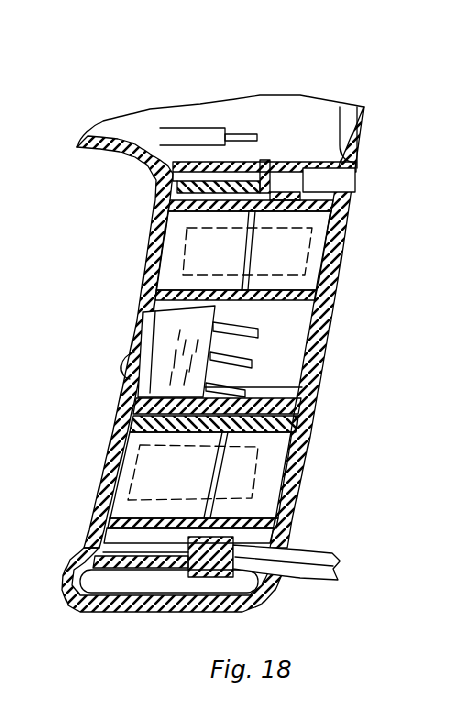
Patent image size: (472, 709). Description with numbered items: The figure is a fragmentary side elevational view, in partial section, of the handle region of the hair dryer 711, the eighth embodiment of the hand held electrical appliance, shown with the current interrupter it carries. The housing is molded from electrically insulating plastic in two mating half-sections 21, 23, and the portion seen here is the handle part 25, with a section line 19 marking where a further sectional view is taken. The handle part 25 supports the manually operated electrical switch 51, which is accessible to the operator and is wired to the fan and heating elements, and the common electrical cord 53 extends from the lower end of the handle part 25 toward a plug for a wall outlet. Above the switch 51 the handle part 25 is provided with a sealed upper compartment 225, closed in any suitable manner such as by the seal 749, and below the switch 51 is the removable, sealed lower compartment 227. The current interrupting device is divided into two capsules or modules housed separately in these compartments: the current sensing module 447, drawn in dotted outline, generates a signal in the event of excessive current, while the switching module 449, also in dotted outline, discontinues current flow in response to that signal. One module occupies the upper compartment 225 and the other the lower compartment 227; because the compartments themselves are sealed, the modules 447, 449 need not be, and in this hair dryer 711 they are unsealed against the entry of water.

The section line 19- 19 is at (272, 35).
The left housing half-section 21 is at (156, 210).
The right housing half-section 23 is at (328, 307).
The handle part 25 is at (324, 367).
The electrical switch 51 is at (164, 322).
The electrical cord 53 is at (325, 553).
The upper compartment 225 is at (336, 262).
The lower compartment 227 is at (291, 464).
The current sensing module 447 is at (202, 243).
The switching module 449 is at (136, 465).
The hair dryer 711 is at (114, 367).
The seal 749 is at (262, 237).